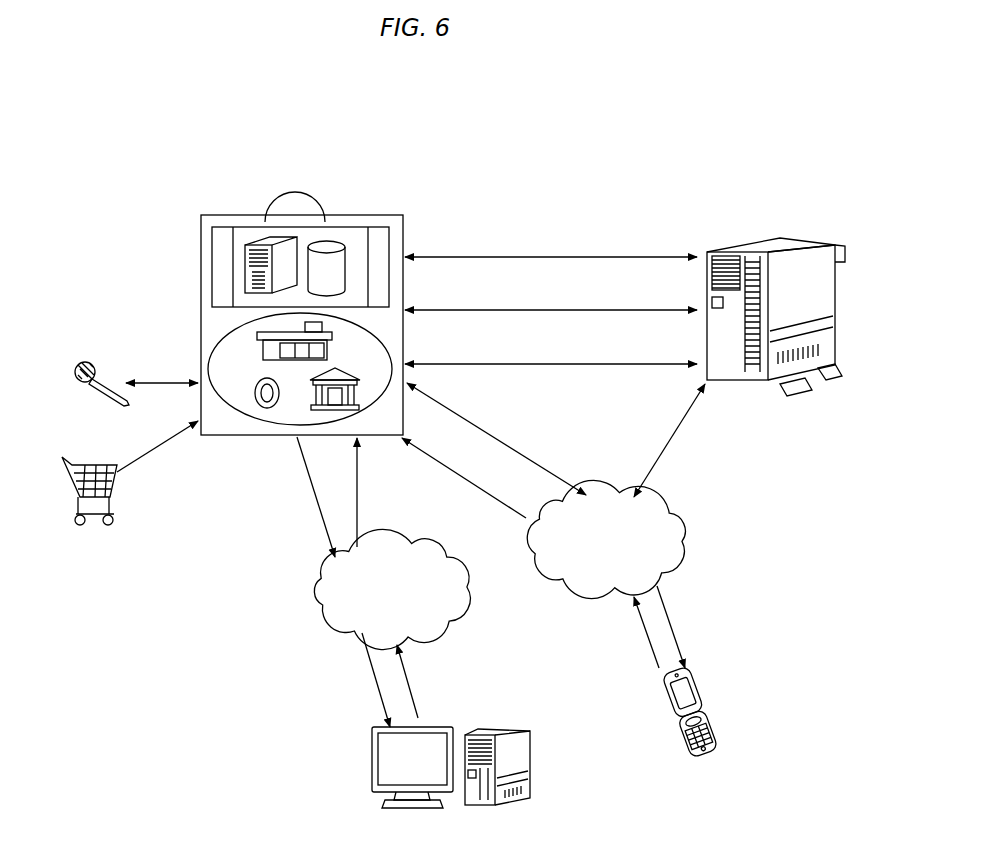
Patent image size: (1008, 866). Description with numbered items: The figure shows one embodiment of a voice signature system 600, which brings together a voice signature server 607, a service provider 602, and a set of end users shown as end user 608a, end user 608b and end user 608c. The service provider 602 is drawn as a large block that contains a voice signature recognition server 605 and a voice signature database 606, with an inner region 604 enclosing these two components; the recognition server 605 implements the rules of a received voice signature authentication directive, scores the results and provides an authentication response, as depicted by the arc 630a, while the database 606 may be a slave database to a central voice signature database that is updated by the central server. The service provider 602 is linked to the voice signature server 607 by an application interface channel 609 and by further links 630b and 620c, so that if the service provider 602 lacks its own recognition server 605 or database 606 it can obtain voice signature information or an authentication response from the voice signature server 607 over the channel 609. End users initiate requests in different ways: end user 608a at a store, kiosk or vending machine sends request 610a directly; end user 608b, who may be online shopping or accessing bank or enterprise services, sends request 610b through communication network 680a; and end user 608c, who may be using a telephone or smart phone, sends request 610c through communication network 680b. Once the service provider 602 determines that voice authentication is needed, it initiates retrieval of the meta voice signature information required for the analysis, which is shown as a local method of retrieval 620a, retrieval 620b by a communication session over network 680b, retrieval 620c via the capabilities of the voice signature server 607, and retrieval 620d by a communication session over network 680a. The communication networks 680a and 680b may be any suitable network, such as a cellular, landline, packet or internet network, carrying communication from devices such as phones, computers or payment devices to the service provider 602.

The voice signature system 600 is at (125, 138).
The service provider 602 is at (200, 333).
The memory 604 is at (213, 277).
The voice signature recognition server 605 is at (248, 238).
The voice signature database 606 is at (345, 238).
The voice signature server 607 is at (883, 313).
The end user 608a is at (177, 558).
The end user 608b is at (592, 730).
The end user 608c is at (770, 690).
The application interface channel 609 is at (560, 357).
The end user request 610a is at (210, 490).
The end user request 610b is at (418, 505).
The end user request 610c is at (552, 492).
The local retrieval of meta voice signature information 620a is at (171, 380).
The retrieval of meta voice signature information over communication network 620b is at (602, 457).
The retrieval of meta voice signature information via voice signature server 620c is at (570, 303).
The retrieval of meta voice signature information over communication network 620d is at (318, 502).
The utilization of voice signature recognition server 630a is at (317, 162).
The data transfer to content server 630b is at (570, 248).
The communication network 680a is at (525, 568).
The communication network 680b is at (737, 517).